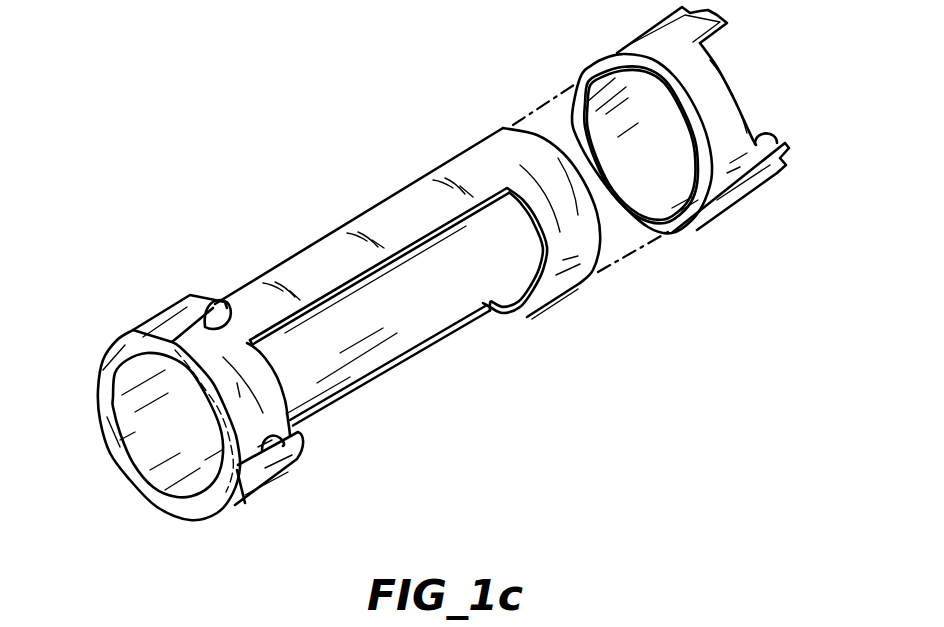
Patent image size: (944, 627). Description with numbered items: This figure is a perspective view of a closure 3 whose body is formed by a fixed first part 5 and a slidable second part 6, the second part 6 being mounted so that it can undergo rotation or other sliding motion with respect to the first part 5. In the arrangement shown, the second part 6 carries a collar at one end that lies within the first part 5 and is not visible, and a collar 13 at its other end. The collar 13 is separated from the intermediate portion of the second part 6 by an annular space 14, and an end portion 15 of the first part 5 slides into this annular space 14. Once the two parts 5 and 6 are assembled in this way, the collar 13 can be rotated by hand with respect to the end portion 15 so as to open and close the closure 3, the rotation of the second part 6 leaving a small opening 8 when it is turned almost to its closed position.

The tubular sleeve 3 is at (413, 128).
The fixed first part 5 is at (650, 52).
The slidable second part 6 is at (397, 313).
The opening 8 is at (777, 177).
The collar 13 is at (180, 317).
The annular space 14 is at (233, 325).
The end portion 15 is at (673, 232).